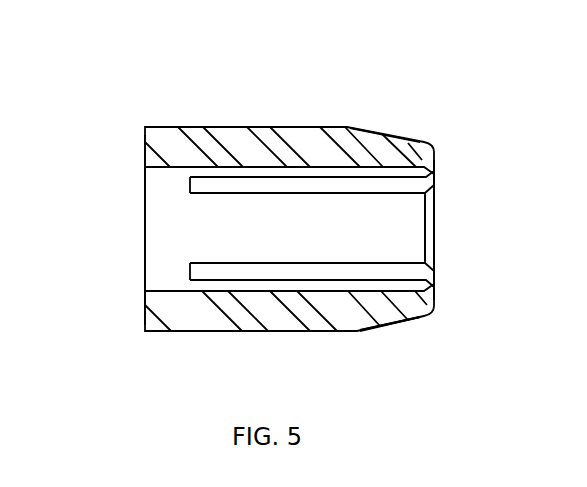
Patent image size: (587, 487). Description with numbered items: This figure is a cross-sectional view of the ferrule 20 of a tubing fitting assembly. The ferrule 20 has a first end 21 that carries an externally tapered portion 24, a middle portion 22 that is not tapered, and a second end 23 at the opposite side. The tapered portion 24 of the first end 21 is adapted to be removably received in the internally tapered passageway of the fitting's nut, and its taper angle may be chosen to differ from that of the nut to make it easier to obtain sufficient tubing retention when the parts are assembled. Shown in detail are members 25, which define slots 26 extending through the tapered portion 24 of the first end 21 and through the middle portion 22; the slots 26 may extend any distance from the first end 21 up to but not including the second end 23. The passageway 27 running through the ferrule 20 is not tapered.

The ferrule 20 is at (295, 80).
The first end 21 is at (444, 134).
The middle portion 22 is at (289, 114).
The second end 23 is at (127, 135).
The externally tapered portion 24 is at (392, 334).
The members 25 is at (387, 145).
The slots 26 is at (327, 180).
The passageway 27 is at (172, 238).